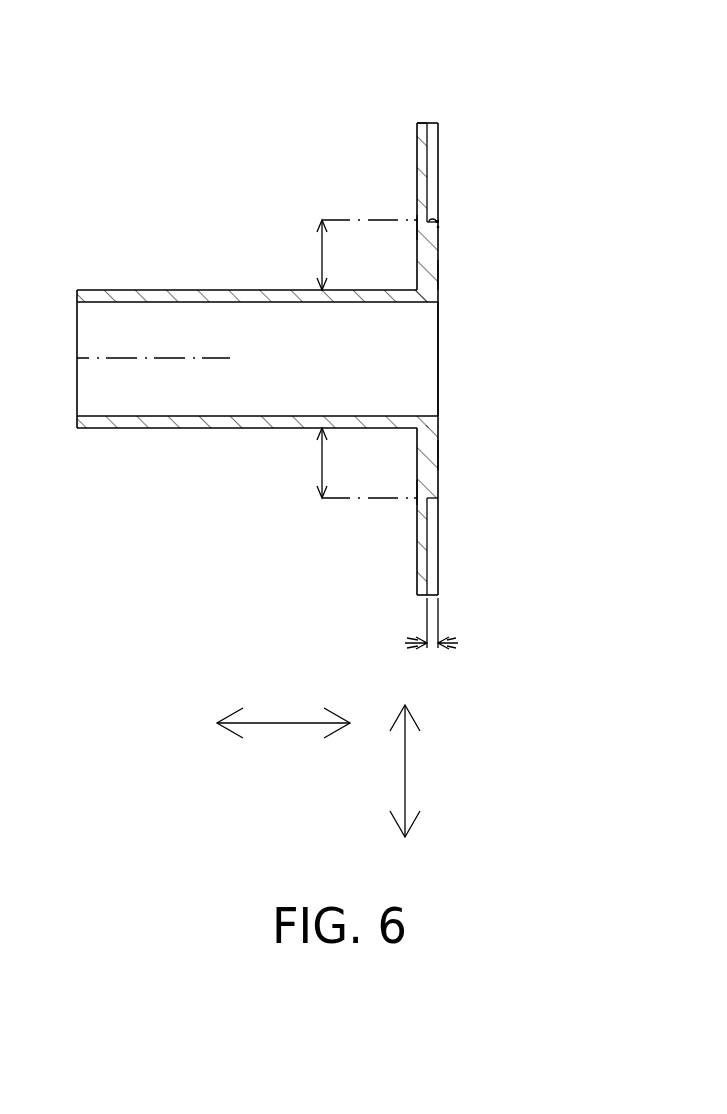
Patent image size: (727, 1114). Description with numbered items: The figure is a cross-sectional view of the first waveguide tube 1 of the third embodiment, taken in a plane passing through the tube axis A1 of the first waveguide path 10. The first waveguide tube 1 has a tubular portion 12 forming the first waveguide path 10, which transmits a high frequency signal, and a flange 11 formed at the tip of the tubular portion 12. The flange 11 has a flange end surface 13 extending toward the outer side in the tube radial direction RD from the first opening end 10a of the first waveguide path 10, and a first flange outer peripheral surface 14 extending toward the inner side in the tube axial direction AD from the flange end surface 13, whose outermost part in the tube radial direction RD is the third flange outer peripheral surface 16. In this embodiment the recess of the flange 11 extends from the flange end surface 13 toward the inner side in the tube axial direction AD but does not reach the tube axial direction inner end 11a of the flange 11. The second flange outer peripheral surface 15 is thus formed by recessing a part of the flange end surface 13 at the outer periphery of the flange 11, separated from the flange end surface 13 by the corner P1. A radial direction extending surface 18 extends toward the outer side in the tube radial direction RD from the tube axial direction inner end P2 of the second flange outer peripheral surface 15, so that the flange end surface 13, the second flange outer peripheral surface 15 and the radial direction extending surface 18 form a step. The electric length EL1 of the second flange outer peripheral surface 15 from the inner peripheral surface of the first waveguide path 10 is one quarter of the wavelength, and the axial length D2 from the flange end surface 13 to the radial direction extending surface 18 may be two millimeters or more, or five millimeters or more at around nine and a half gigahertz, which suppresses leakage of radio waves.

The first waveguide tube 1 is at (263, 66).
The first waveguide path 10 is at (162, 402).
The first opening end 10a is at (437, 305).
The flange 11 is at (415, 118).
The tube axial direction inner end 11a is at (417, 229).
The tubular portion 12 is at (125, 289).
The flange end surface 13 is at (439, 274).
The first flange outer peripheral surface 14 is at (533, 68).
The second flange outer peripheral surface 15 is at (431, 218).
The third flange outer peripheral surface 16 is at (421, 121).
The radial direction extending surface 18 is at (431, 140).
The corner P1 is at (439, 221).
The tube axial direction inner end P2 is at (439, 228).
The tube axis A1 is at (77, 358).
The length D2 is at (439, 639).
The electric length EL1 is at (319, 255).
The tube axial direction AD is at (283, 735).
The tube radial direction RD is at (419, 771).